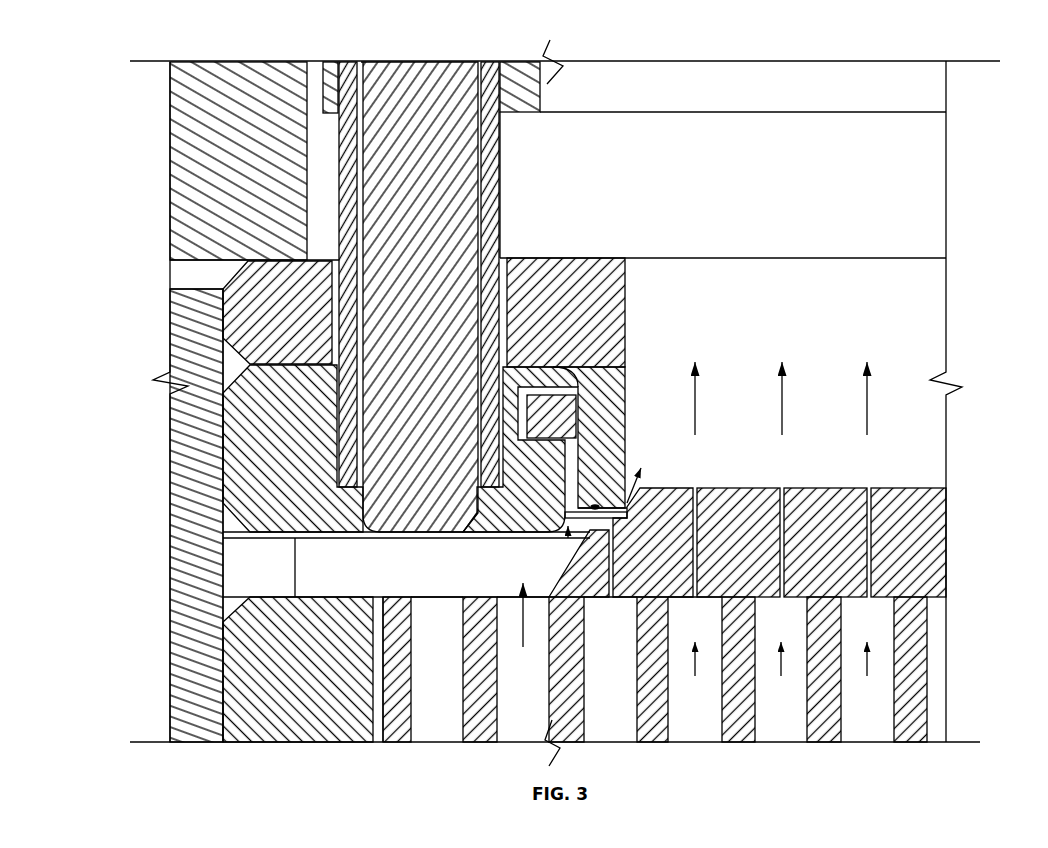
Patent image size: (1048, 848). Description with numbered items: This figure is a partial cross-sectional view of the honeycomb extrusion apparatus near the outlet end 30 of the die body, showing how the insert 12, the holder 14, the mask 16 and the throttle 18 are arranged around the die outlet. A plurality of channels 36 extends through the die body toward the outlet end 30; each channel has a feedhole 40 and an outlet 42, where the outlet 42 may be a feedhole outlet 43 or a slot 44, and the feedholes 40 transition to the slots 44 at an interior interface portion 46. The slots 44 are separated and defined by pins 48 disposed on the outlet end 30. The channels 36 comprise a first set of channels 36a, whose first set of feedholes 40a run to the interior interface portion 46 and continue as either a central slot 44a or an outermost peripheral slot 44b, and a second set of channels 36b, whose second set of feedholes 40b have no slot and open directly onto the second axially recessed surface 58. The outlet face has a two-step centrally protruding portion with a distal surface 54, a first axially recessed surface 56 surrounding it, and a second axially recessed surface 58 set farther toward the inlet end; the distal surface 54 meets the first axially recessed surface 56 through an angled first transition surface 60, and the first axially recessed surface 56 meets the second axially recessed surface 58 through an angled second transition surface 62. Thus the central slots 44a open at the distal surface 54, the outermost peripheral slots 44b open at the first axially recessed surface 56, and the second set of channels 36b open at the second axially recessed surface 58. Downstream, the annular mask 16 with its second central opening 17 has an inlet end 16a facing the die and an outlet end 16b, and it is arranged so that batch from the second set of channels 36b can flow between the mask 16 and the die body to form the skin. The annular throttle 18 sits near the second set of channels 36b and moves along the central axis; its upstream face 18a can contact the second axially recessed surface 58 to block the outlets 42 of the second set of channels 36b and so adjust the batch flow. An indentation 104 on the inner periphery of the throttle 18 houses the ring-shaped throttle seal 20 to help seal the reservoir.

The insert 12 is at (520, 68).
The holder 14 is at (226, 68).
The mask 16 is at (545, 230).
The inlet end of the mask 16a is at (630, 500).
The outlet end of the mask 16b is at (562, 262).
The second central opening 17 is at (723, 201).
The throttle 18 is at (312, 542).
The upstream face of the throttle 18a is at (328, 538).
The throttle seal 20 is at (623, 500).
The outlet end 30 is at (893, 368).
The channels 36 is at (626, 682).
The first set of channels 36a is at (590, 730).
The second set of channels 36b is at (426, 730).
The feedhole 40 is at (566, 656).
The first set of feedholes 40a is at (653, 656).
The second set of feedholes 40b is at (437, 656).
The outlet 42 is at (702, 456).
The feedhole outlet 43 is at (420, 586).
The slot 44 is at (798, 524).
The central slot 44a is at (790, 540).
The outermost peripheral slot 44b is at (650, 488).
The interior interface portion 46 is at (620, 598).
The pins 48 is at (726, 542).
The distal surface 54 is at (888, 488).
The first axially recessed surface 56 is at (580, 542).
The second axially recessed surface 58 is at (392, 597).
The first transition surface 60 is at (629, 500).
The second transition surface 62 is at (513, 590).
The indentation 104 is at (556, 390).